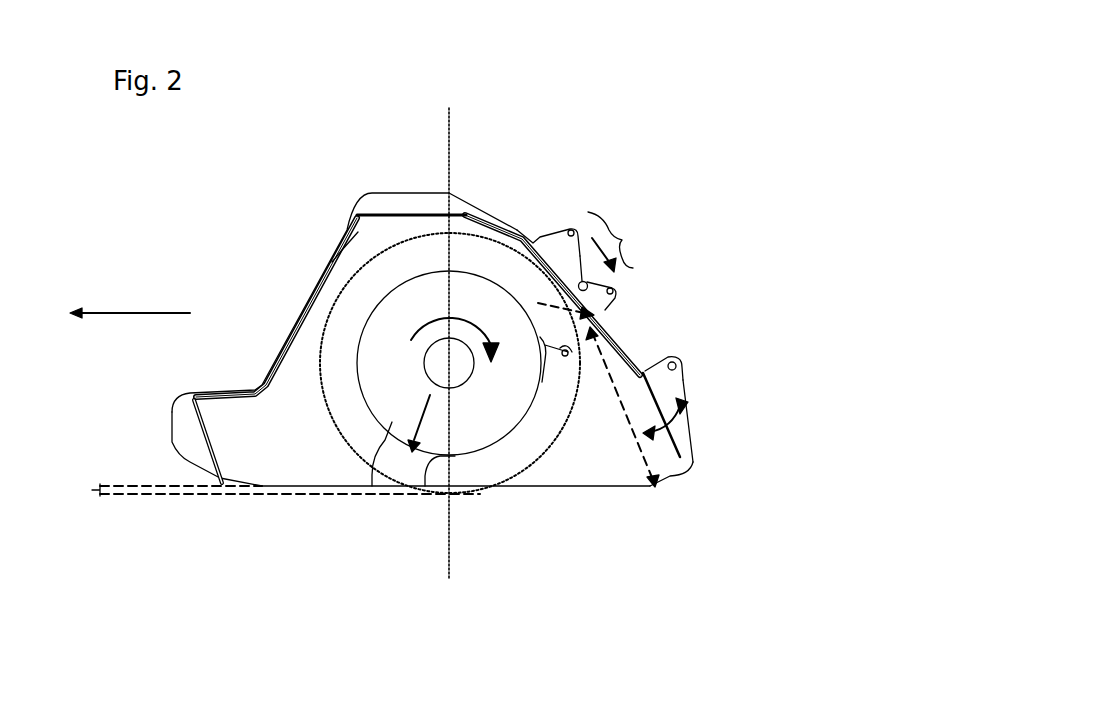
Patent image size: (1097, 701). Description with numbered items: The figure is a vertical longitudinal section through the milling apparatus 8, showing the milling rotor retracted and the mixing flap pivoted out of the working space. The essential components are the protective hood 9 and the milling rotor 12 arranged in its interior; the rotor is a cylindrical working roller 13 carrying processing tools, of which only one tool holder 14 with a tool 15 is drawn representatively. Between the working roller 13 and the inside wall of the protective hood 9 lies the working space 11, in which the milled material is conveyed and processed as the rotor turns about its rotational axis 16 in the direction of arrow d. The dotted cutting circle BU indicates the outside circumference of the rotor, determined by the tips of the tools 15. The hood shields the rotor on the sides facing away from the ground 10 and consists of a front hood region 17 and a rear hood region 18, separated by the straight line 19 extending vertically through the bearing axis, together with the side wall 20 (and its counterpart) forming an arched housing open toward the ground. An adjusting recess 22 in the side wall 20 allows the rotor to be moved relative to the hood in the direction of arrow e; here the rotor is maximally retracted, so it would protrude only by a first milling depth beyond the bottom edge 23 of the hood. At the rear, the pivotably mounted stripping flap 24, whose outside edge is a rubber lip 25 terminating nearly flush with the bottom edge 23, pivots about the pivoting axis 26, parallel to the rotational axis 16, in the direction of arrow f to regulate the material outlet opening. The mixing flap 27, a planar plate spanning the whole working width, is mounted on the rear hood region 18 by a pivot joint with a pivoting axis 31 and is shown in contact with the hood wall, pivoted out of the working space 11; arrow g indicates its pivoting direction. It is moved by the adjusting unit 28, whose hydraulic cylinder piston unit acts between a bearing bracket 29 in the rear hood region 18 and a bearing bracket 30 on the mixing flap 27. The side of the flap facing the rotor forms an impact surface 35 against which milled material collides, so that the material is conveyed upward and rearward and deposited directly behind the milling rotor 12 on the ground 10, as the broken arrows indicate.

The milling apparatus 8 is at (724, 136).
The protective hood 9 is at (223, 390).
The ground 10 is at (138, 485).
The working space 11 is at (300, 368).
The milling rotor 12 is at (473, 433).
The working roller 13 is at (385, 290).
The tool holder 14 is at (553, 358).
The tool 15 is at (582, 353).
The rotational axis 16 is at (448, 362).
The front hood region 17 is at (355, 213).
The rear hood region 18 is at (472, 207).
The straight line 19 is at (448, 158).
The side wall 20 is at (247, 455).
The adjusting recess 22 is at (387, 477).
The bottom edge 23 is at (527, 486).
The stripping flap 24 is at (687, 443).
The rubber lip 25 is at (697, 473).
The pivoting axis 26 is at (637, 373).
The mixing flap 27 is at (623, 352).
The adjusting unit 28 is at (618, 239).
The bearing bracket 29 is at (548, 247).
The bearing bracket 30 is at (608, 298).
The pivoting axis 31 is at (580, 280).
The impact surface 35 is at (610, 325).